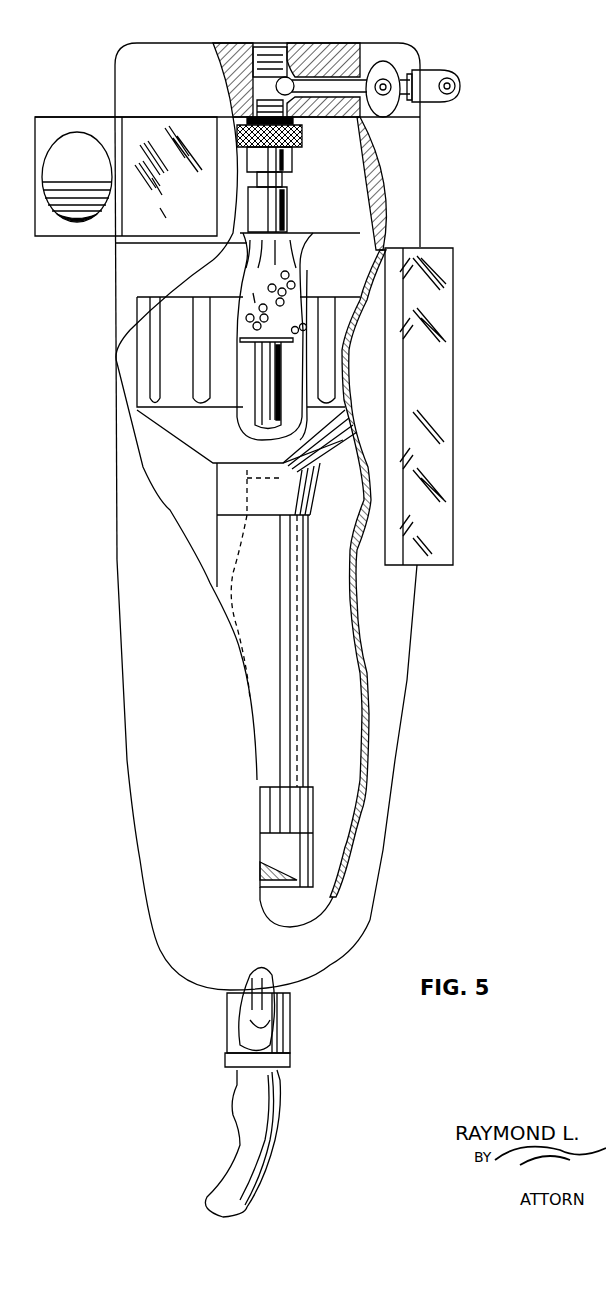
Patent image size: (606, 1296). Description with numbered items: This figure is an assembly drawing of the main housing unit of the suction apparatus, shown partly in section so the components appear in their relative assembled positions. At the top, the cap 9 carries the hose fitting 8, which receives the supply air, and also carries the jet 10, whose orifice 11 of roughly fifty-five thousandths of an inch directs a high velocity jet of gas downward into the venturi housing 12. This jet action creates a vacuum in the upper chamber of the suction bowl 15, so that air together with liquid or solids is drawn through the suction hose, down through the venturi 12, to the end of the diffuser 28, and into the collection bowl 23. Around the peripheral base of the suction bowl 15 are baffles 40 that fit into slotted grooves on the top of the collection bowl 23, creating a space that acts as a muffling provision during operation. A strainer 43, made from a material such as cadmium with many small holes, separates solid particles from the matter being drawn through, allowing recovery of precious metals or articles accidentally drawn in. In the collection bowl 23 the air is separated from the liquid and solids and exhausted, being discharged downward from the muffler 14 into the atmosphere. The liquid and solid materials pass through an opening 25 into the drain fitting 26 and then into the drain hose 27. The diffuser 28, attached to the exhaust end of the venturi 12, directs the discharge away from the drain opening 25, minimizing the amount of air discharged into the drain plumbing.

The hose fitting 8 is at (462, 86).
The cap 9 is at (140, 67).
The jet 10 is at (283, 185).
The orifice 11 is at (258, 418).
The venturi housing 12 is at (276, 710).
The muffler 14 is at (372, 555).
The suction bowl 15 is at (167, 418).
The collection bowl 23 is at (385, 758).
The opening 25 is at (255, 978).
The drain fitting 26 is at (230, 1044).
The drain hose 27 is at (273, 1158).
The diffuser 28 is at (308, 862).
The baffles 40 is at (195, 338).
The strainer 43 is at (297, 232).